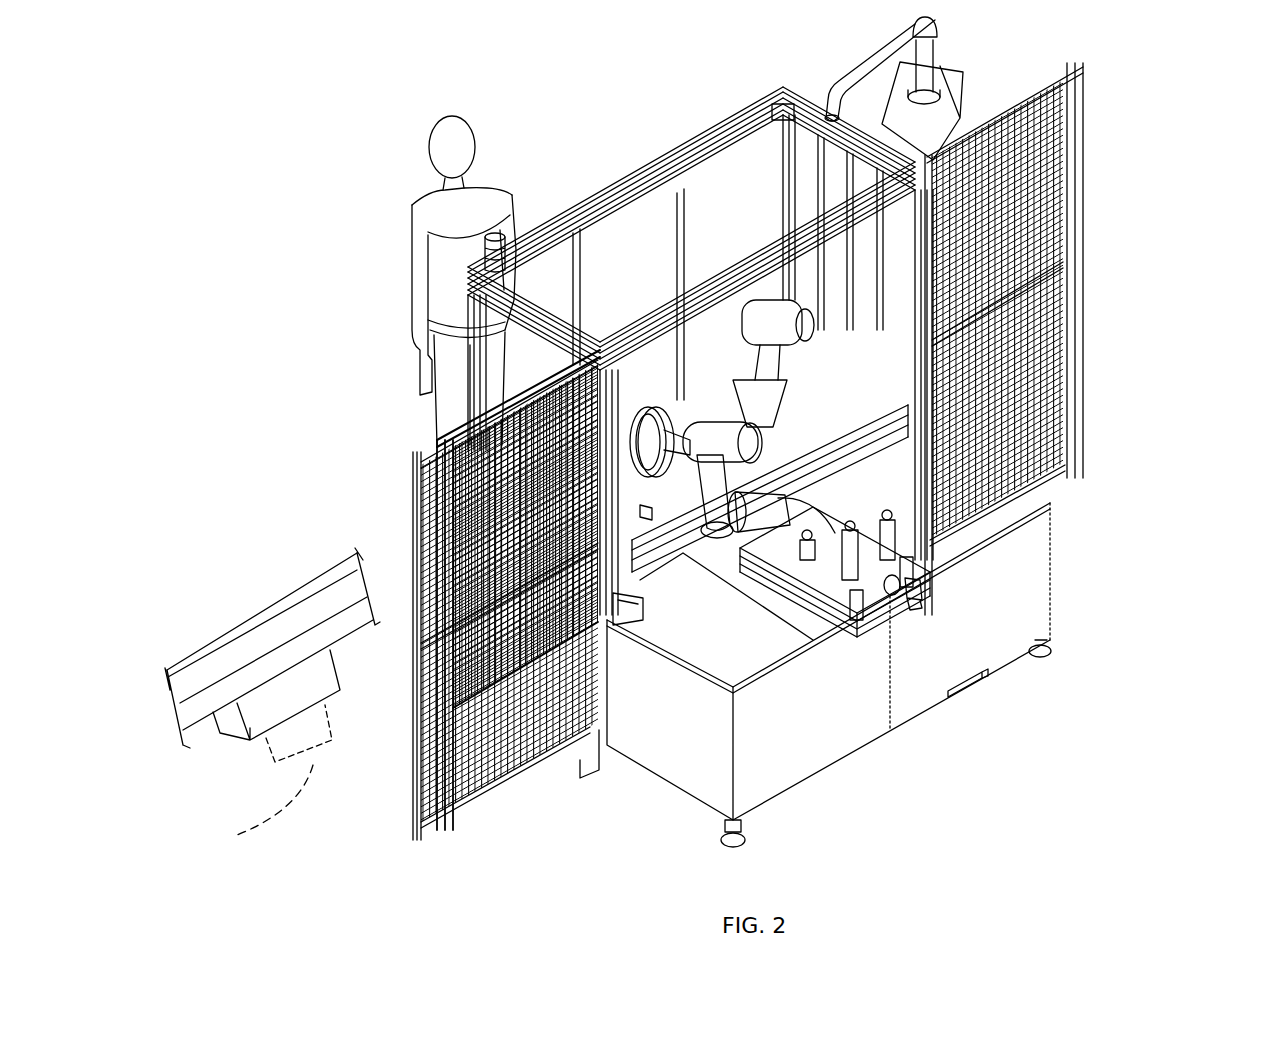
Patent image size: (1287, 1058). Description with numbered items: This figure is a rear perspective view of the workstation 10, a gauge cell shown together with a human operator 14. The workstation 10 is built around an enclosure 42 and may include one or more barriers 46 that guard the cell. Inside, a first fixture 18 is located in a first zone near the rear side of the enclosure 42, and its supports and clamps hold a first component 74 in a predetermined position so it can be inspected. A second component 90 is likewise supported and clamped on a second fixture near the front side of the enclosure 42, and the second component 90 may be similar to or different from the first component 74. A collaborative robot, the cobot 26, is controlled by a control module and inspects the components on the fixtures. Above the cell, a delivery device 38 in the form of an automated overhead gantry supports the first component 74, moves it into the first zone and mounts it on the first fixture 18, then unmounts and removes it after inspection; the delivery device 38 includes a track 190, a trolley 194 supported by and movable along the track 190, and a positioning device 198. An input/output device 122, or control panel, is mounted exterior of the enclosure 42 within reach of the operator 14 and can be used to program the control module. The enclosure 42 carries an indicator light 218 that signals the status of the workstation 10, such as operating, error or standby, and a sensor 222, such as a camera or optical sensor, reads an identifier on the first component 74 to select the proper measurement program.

The workstation 10 is at (752, 473).
The human operator 14 is at (410, 190).
The first fixture 18 is at (822, 620).
The cobot 26 is at (772, 390).
The delivery device 38 is at (256, 673).
The enclosure 42 is at (712, 128).
The barriers 46 is at (1060, 355).
The first component 74 is at (658, 380).
The second component 90 is at (870, 463).
The input/output device 122 is at (957, 73).
The track 190 is at (233, 647).
The trolley 194 is at (233, 730).
The positioning device 198 is at (269, 786).
The indicator light 218 is at (486, 237).
The sensor 222 is at (923, 600).